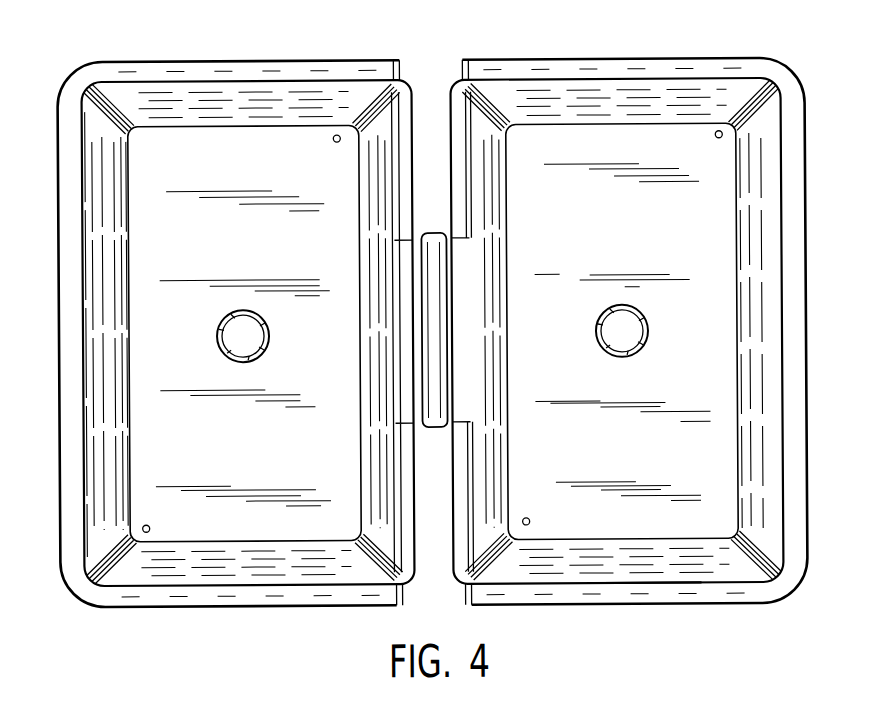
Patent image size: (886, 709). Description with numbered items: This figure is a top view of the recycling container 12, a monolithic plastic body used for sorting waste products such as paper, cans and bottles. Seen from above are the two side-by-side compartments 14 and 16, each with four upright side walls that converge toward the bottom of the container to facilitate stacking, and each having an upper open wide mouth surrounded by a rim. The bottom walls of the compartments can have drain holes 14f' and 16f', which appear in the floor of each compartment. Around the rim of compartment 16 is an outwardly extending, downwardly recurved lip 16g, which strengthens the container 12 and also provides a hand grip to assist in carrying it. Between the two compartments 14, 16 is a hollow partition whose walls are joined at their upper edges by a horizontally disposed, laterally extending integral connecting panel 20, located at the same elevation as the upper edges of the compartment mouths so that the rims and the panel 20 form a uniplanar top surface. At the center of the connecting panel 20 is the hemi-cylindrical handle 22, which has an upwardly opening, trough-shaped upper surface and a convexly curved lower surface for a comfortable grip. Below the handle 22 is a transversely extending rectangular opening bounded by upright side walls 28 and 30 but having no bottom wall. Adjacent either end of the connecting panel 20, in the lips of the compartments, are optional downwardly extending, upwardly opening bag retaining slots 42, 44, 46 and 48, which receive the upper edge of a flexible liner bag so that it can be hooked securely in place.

The container 12 is at (281, 62).
The compartment 14 is at (262, 508).
The compartment 16 is at (670, 517).
The connecting panel 20 is at (430, 160).
The handle 22 is at (440, 312).
The upright side wall 28 is at (462, 418).
The upright side wall 30 is at (460, 240).
The bag retaining slot 42 is at (397, 60).
The bag retaining slot 44 is at (466, 60).
The bag retaining slot 46 is at (398, 604).
The bag retaining slot 48 is at (470, 604).
The drain hole 14f' is at (241, 332).
The drain hole 16f' is at (622, 328).
The lip 16g is at (640, 590).